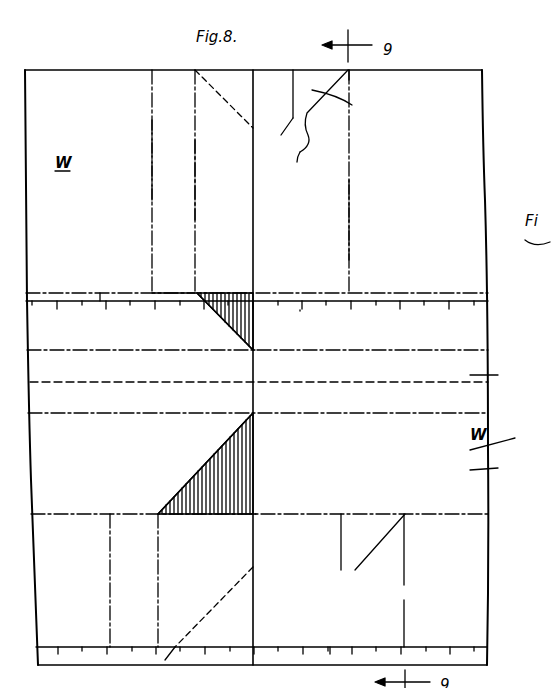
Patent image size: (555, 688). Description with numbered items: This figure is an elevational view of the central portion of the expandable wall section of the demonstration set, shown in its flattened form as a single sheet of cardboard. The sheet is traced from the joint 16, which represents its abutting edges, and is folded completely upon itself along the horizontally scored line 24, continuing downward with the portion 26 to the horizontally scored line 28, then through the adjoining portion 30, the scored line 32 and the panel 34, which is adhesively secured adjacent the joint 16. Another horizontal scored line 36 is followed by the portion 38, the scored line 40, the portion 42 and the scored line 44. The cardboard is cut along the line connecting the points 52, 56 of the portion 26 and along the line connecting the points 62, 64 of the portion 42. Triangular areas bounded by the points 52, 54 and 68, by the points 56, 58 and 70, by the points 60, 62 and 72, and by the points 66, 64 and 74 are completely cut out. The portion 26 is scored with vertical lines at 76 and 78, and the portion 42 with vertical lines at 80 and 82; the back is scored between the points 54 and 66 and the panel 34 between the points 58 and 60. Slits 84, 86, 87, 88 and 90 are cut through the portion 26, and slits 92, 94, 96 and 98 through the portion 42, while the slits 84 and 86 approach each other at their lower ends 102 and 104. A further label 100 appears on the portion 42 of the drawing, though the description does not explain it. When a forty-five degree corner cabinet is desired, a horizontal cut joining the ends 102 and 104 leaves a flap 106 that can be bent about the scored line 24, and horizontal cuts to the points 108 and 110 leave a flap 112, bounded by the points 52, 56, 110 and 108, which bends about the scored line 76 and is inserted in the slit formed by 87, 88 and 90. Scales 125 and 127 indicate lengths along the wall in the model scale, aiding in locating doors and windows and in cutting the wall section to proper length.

The joint 16 is at (412, 383).
The horizontally scored line 24 is at (445, 70).
The portion 26 is at (470, 166).
The horizontally scored line 28 is at (433, 293).
The adjoining portion 30 is at (474, 330).
The scored line 32 is at (464, 350).
The panel 34 is at (493, 379).
The horizontal scored line 36 is at (466, 413).
The portion 38 is at (493, 470).
The scored line 40 is at (466, 514).
The portion 42 is at (470, 563).
The scored line 44 is at (478, 671).
The point 52 is at (253, 70).
The point 54 is at (253, 128).
The point 56 is at (253, 293).
The point 58 is at (253, 350).
The point 60 is at (253, 413).
The point 62 is at (256, 514).
The point 64 is at (262, 647).
The point 66 is at (253, 567).
The point 68 is at (195, 70).
The point 70 is at (198, 292).
The point 72 is at (158, 514).
The point 74 is at (160, 665).
The vertical scored line 76 is at (152, 157).
The vertical scored line 78 is at (195, 175).
The vertical scored line 80 is at (110, 568).
The vertical scored line 82 is at (158, 570).
The slit 84 is at (293, 85).
The slit 86 is at (322, 103).
The slit 87 is at (349, 77).
The slit 88 is at (349, 142).
The slit 90 is at (349, 230).
The slit 92 is at (341, 543).
The slit 94 is at (373, 552).
The slit 96 is at (404, 558).
The slit 98 is at (404, 620).
The bottom panel 100 is at (222, 568).
The lower end of slit 102 is at (285, 135).
The lower end of slit 104 is at (297, 164).
The flap 106 is at (352, 105).
The point 108 is at (152, 70).
The point 110 is at (158, 290).
The flap 112 is at (207, 220).
The scale 125 is at (100, 297).
The scale 127 is at (322, 647).